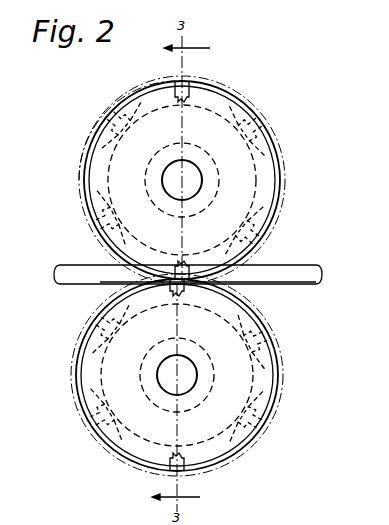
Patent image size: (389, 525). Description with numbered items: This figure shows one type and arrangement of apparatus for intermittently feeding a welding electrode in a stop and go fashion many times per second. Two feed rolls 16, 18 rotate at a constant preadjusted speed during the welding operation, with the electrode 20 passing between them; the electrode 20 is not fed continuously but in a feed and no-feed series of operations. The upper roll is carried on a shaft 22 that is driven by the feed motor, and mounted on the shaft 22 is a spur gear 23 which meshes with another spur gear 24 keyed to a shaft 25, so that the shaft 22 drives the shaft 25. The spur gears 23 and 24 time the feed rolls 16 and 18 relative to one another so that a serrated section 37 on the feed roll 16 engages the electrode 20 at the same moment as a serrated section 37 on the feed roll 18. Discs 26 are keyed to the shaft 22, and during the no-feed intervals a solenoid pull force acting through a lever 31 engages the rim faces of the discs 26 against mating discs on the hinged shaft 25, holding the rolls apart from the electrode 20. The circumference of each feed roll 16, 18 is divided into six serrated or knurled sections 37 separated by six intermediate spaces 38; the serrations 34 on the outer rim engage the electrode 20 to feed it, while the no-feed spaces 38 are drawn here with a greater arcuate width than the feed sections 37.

The feed roll 16 is at (130, 103).
The feed roll 18 is at (212, 442).
The electrode 20 is at (188, 290).
The shaft 22 is at (200, 179).
The spur gear 23 is at (251, 262).
The spur gear 24 is at (270, 334).
The shaft 25 is at (197, 377).
The discs 26 is at (241, 100).
The lever 31 is at (100, 322).
The serrations 34 is at (115, 122).
The serrated sections 37 is at (84, 180).
The intermediate spaces 38 is at (206, 276).